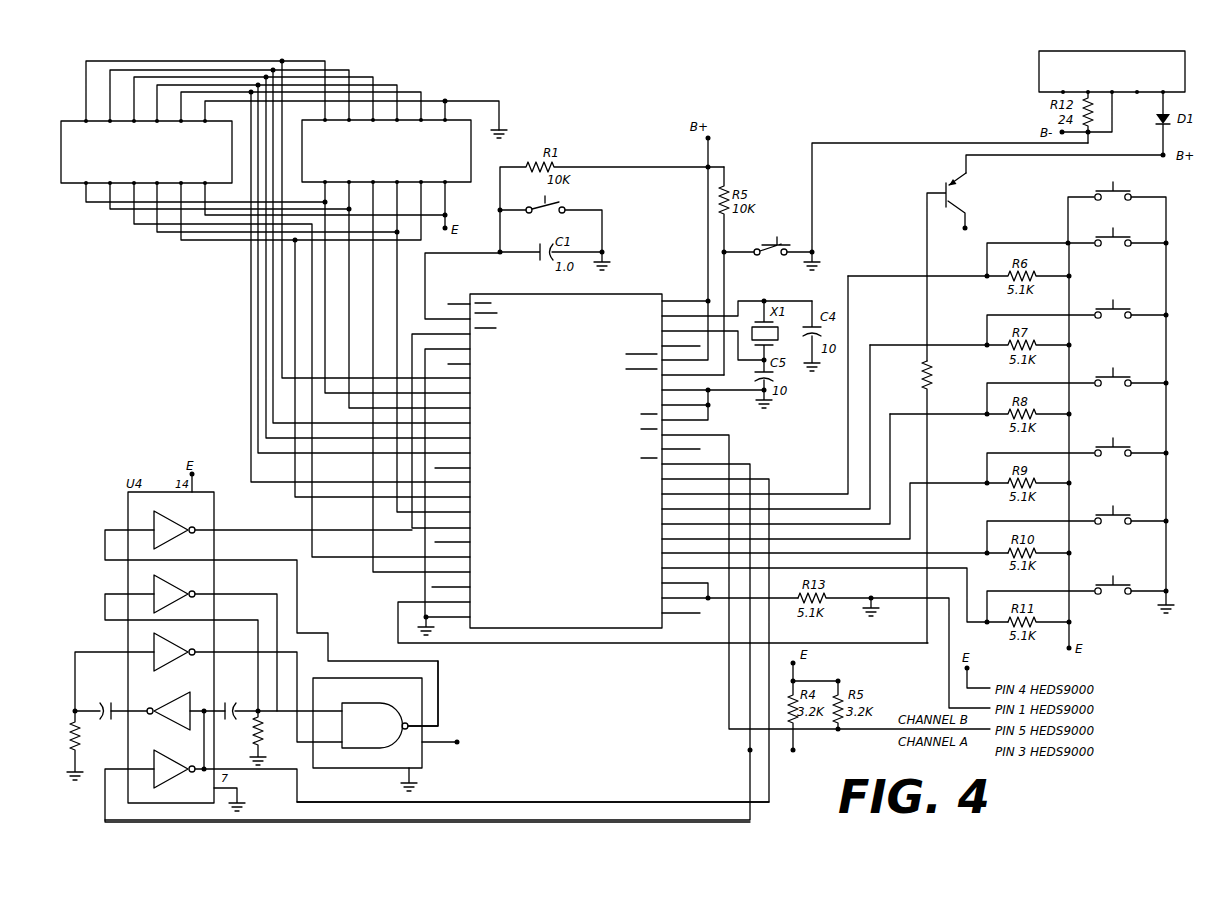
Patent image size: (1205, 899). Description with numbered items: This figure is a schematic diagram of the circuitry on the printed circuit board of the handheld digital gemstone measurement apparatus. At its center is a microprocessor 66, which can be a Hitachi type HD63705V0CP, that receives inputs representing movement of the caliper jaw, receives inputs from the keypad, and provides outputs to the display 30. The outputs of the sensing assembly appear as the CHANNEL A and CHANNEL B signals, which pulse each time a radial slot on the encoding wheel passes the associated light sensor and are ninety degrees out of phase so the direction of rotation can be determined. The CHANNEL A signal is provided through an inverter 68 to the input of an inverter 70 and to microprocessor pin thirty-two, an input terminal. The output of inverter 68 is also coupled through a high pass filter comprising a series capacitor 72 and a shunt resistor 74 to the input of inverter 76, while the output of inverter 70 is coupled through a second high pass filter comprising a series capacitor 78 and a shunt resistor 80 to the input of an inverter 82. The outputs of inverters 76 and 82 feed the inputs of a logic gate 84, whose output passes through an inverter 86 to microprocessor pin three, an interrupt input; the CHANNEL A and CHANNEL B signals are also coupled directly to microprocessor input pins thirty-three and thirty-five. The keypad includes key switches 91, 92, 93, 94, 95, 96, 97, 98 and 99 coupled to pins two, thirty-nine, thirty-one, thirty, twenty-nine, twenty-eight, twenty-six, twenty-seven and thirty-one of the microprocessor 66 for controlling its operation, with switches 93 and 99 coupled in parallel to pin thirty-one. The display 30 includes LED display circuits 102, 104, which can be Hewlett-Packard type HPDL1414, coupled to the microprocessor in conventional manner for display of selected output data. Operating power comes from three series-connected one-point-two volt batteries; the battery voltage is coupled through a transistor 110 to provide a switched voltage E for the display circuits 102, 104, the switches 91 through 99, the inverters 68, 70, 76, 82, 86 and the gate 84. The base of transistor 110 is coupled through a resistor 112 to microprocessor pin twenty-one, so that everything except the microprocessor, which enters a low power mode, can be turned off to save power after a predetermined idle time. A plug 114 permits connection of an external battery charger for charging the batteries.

The display 30 is at (479, 87).
The microprocessor 66 is at (566, 458).
The inverter 68 is at (167, 779).
The inverter 70 is at (165, 715).
The series capacitor 72 is at (242, 695).
The shunt resistor 74 is at (248, 744).
The inverter 76 is at (167, 603).
The series capacitor 78 is at (98, 706).
The shunt resistor 80 is at (82, 748).
The inverter 82 is at (167, 661).
The logic gate 84 is at (382, 733).
The inverter 86 is at (167, 539).
The key switch 91 is at (568, 199).
The key switch 92 is at (782, 233).
The key switch 93 is at (1122, 230).
The key switch 94 is at (1122, 298).
The key switch 95 is at (1122, 366).
The key switch 96 is at (1124, 434).
The key switch 97 is at (1124, 569).
The key switch 98 is at (1124, 501).
The key switch 99 is at (1110, 185).
The LED display circuit 102 is at (158, 163).
The LED display circuit 104 is at (398, 162).
The transistor 110 is at (944, 185).
The resistor 112 is at (925, 380).
The plug 114 is at (1039, 73).